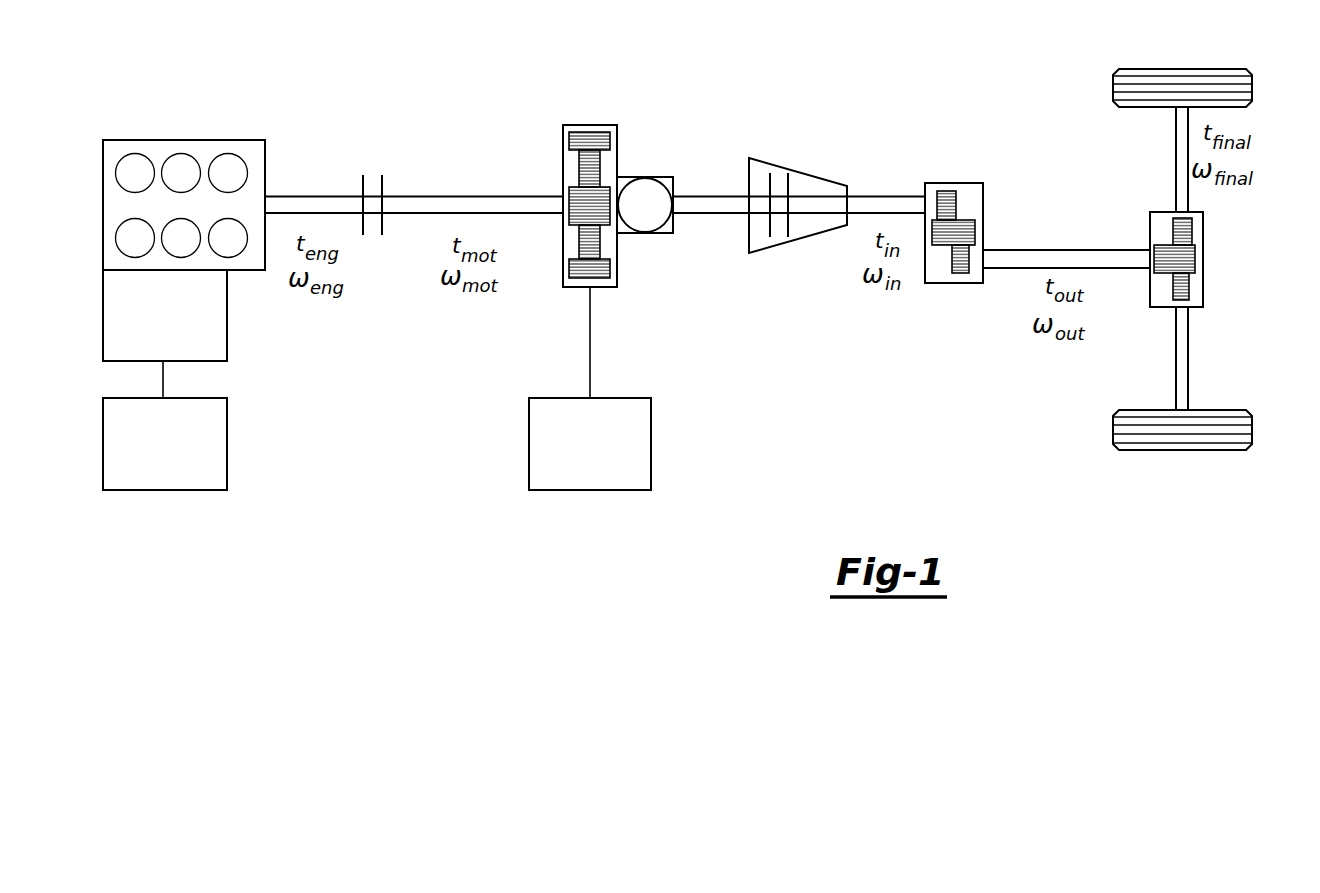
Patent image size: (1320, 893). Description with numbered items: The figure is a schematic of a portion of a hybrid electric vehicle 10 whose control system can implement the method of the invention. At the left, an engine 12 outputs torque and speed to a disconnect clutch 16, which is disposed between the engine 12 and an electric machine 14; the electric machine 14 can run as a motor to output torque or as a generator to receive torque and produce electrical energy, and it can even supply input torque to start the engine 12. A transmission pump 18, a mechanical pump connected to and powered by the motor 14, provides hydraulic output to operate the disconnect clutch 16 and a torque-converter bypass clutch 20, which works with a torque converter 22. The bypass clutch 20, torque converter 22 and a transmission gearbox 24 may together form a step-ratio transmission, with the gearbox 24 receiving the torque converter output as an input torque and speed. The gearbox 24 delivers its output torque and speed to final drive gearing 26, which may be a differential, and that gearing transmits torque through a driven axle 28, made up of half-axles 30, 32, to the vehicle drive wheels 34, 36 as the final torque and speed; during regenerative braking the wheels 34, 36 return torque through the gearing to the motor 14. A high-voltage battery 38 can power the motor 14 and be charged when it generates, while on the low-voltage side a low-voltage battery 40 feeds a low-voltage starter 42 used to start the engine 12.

The vehicle 10 is at (912, 74).
The engine 12 is at (185, 140).
The electric machine 14 is at (591, 125).
The disconnect clutch 16 is at (362, 180).
The transmission pump 18 is at (646, 177).
The torque-converter bypass clutch 20 is at (792, 180).
The torque converter 22 is at (769, 161).
The transmission gearbox 24 is at (955, 183).
The final drive gearing 26 is at (1203, 225).
The driven axle 28 is at (1200, 334).
The half-axle 30 is at (1188, 380).
The half-axle 32 is at (1176, 138).
The vehicle drive wheel 34 is at (1252, 430).
The vehicle drive wheel 36 is at (1252, 88).
The high-voltage battery 38 is at (591, 490).
The low-voltage battery 40 is at (165, 490).
The low-voltage starter 42 is at (227, 317).